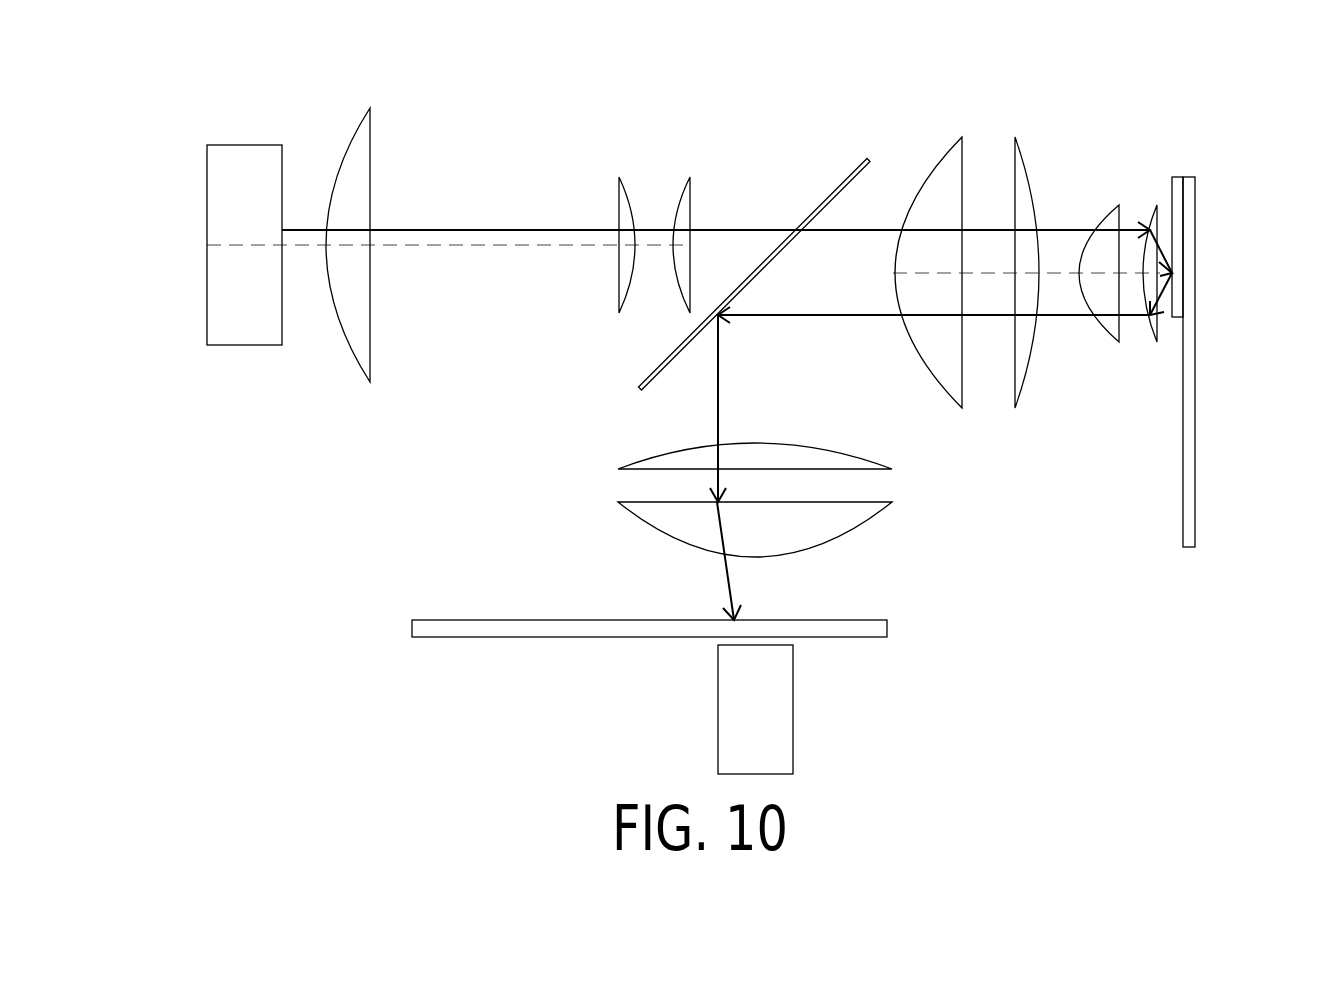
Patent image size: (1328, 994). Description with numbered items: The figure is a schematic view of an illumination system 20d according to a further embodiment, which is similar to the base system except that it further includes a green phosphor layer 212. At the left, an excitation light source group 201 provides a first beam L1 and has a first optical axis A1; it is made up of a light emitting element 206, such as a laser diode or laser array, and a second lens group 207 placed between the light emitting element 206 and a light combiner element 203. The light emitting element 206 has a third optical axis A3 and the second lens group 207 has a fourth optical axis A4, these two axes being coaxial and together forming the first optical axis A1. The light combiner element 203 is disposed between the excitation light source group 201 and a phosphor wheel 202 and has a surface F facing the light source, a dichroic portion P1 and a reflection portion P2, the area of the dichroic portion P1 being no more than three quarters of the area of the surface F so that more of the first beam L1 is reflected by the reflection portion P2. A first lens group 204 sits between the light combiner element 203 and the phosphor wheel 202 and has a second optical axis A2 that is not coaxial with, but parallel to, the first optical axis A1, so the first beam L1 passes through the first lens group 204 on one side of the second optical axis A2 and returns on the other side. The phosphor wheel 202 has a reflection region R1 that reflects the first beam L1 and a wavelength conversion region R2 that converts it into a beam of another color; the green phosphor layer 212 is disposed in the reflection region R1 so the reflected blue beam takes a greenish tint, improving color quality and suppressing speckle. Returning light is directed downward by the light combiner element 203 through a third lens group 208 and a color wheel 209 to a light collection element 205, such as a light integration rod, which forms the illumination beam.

The illumination system 20d is at (165, 88).
The excitation light source group 201 is at (533, 52).
The light emitting element 206 is at (260, 155).
The second lens group 207 is at (690, 102).
The light combiner element 203 is at (855, 168).
The first lens group 204 is at (1158, 112).
The green phosphor layer 212 is at (1178, 215).
The phosphor wheel 202 is at (1190, 530).
The third lens group 208 is at (912, 443).
The color wheel 209 is at (447, 630).
The light collection element 205 is at (768, 714).
The first beam L1 is at (527, 228).
The surface F is at (803, 220).
The dichroic portion P1 is at (824, 195).
The reflection portion P2 is at (652, 368).
The first optical axis A1 is at (228, 428).
The second optical axis A2 is at (1056, 275).
The third optical axis A3 is at (262, 247).
The fourth optical axis A4 is at (471, 247).
The reflection region R1 is at (1168, 184).
The wavelength conversion region R2 is at (1183, 508).